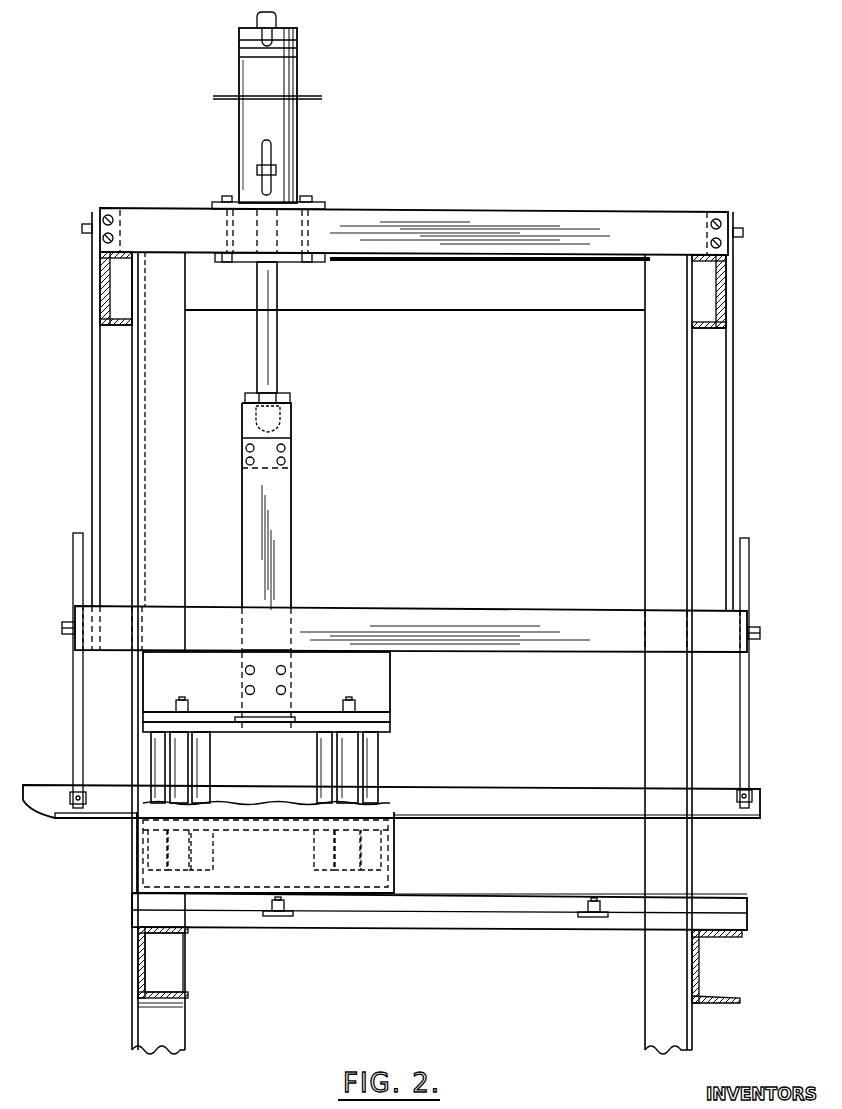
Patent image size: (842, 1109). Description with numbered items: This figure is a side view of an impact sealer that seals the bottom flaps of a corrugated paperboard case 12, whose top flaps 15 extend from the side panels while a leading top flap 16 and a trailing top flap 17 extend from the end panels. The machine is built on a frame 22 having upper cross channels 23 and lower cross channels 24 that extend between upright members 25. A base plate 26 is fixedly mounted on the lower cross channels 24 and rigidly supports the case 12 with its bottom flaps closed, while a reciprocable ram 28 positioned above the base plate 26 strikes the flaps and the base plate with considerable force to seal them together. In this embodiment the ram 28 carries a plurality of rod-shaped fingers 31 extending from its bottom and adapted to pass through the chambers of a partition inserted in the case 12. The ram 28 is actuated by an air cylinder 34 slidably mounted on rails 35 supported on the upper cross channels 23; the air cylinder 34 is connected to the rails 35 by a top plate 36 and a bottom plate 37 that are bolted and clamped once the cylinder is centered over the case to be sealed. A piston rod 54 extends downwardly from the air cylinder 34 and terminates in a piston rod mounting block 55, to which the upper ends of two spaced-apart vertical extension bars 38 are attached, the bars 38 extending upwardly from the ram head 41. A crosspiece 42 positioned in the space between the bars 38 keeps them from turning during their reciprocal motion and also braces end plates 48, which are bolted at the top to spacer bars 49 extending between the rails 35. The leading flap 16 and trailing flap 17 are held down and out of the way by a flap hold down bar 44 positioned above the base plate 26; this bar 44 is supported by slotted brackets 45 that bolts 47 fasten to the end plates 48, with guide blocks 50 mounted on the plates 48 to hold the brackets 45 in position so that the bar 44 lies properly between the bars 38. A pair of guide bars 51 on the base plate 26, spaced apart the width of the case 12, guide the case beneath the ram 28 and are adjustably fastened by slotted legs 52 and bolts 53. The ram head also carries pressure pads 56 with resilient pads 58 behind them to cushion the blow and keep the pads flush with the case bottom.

The case 12 is at (405, 867).
The top flaps 15 is at (260, 802).
The leading top flap 16 is at (445, 815).
The trailing top flap 17 is at (78, 818).
The frame 22 is at (678, 188).
The upper cross channels 23 is at (110, 260).
The lower cross channels 24 is at (138, 967).
The upright members 25 is at (178, 542).
The base plate 26 is at (439, 908).
The reciprocable ram 28 is at (362, 594).
The rod-shaped fingers 31 is at (203, 764).
The air cylinder 34 is at (297, 69).
The rails 35 is at (444, 216).
The top plate 36 is at (300, 200).
The bottom plate 37 is at (318, 262).
The vertical extension bars 38 is at (291, 512).
The ram head 41 is at (375, 692).
The crosspiece 42 is at (538, 652).
The flap hold down bar 44 is at (391, 815).
The brackets 45 is at (73, 700).
The bolts 47 is at (62, 632).
The end plates 48 is at (92, 436).
The spacer bars 49 is at (108, 214).
The guide blocks 50 is at (78, 606).
The guide bars 51 is at (483, 896).
The slotted legs 52 is at (283, 917).
The bolts 53 is at (284, 898).
The piston rod 54 is at (277, 366).
The piston rod mounting block 55 is at (288, 450).
The pressure pads 56 is at (390, 731).
The resilient pads 58 is at (390, 720).